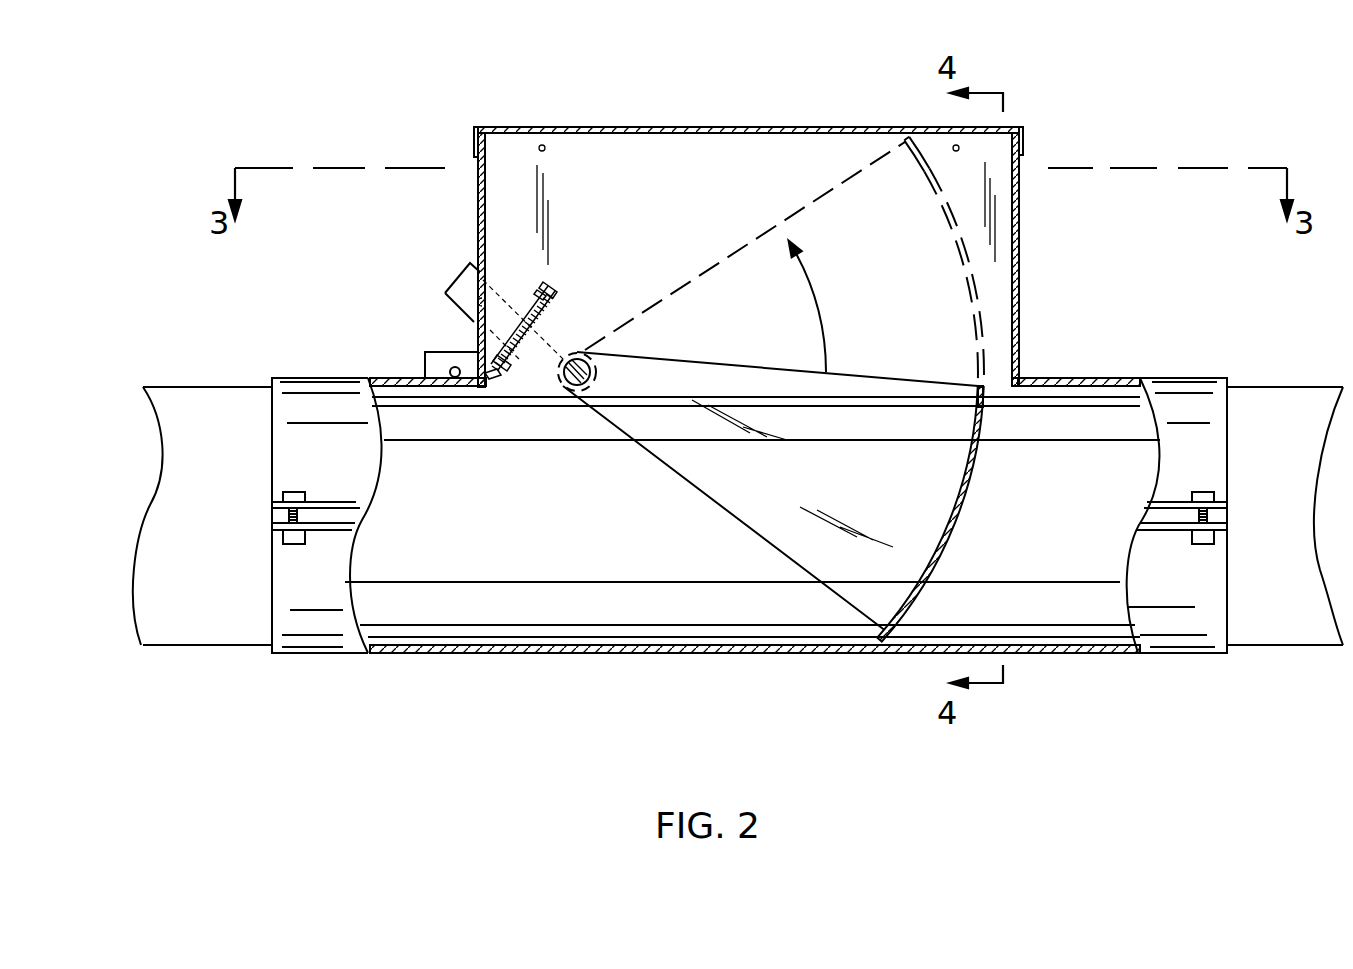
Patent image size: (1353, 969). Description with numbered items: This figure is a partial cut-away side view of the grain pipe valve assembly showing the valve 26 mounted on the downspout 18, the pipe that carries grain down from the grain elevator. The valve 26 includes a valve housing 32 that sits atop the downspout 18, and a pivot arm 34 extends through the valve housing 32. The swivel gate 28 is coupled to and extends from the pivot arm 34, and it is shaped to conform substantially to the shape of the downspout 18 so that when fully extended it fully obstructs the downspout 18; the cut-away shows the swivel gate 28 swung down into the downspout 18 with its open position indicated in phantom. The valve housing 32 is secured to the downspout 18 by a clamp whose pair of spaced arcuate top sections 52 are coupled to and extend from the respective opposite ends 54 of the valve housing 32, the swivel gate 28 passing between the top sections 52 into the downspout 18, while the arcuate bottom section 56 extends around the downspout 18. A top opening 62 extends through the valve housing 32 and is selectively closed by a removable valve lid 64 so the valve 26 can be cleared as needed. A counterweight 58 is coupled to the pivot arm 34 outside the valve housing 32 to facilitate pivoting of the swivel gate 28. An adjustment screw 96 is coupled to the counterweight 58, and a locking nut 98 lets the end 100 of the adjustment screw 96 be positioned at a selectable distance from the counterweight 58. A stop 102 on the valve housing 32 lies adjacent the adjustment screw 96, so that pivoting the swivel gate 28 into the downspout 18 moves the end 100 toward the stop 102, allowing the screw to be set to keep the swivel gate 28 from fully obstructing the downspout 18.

The downspout 18 is at (188, 630).
The valve 26 is at (770, 208).
The swivel gate 28 is at (748, 501).
The valve housing 32 is at (1018, 243).
The pivot arm 34 is at (577, 360).
The arcuate top sections 52 is at (333, 388).
The opposite ends of the valve housing 54 is at (479, 379).
The bottom section 56 is at (298, 655).
The counterweight 58 is at (510, 295).
The top opening 62 is at (578, 140).
The valve lid 64 is at (728, 127).
The adjustment screw 96 is at (520, 367).
The locking nut 98 is at (537, 363).
The end of the adjustment screw 100 is at (503, 373).
The stop 102 is at (552, 283).